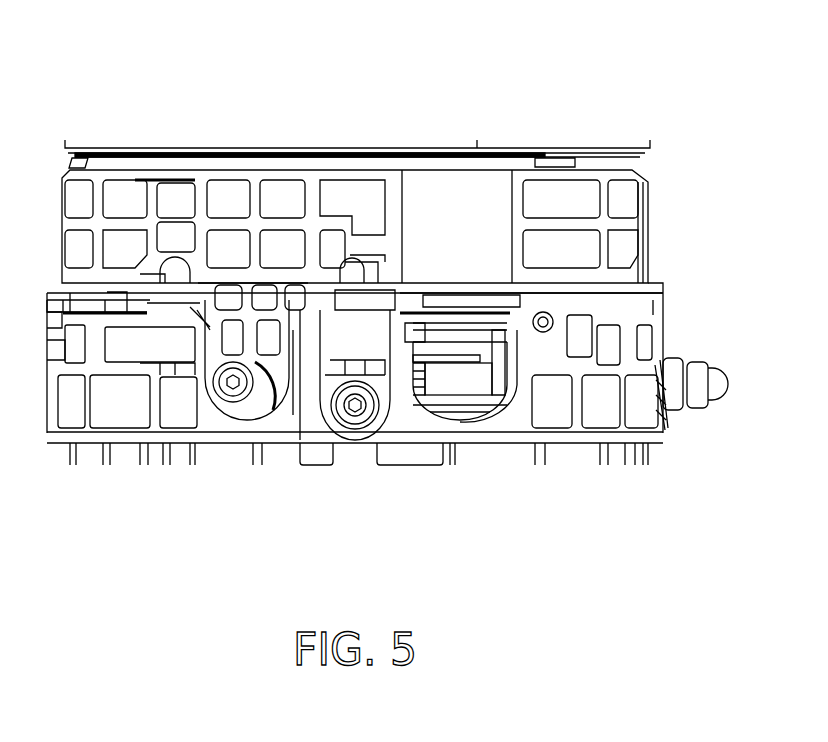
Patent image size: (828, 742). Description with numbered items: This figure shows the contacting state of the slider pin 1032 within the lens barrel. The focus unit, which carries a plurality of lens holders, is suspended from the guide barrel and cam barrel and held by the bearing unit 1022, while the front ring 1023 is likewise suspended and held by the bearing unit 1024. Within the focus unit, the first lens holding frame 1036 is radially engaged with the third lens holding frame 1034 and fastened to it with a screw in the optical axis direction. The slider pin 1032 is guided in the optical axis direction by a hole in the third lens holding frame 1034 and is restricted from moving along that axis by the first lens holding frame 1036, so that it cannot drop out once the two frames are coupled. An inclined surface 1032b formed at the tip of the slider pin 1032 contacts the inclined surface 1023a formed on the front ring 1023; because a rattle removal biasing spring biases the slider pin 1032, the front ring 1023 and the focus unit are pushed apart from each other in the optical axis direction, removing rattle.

The bearing unit 1022 is at (355, 412).
The front ring 1023 is at (226, 200).
The inclined surface 1023a is at (355, 270).
The bearing unit 1024 is at (237, 390).
The slider pin 1032 is at (395, 445).
The inclined surface 1032b is at (363, 268).
The third lens holding frame 1034 is at (110, 400).
The first lens holding frame 1036 is at (412, 302).